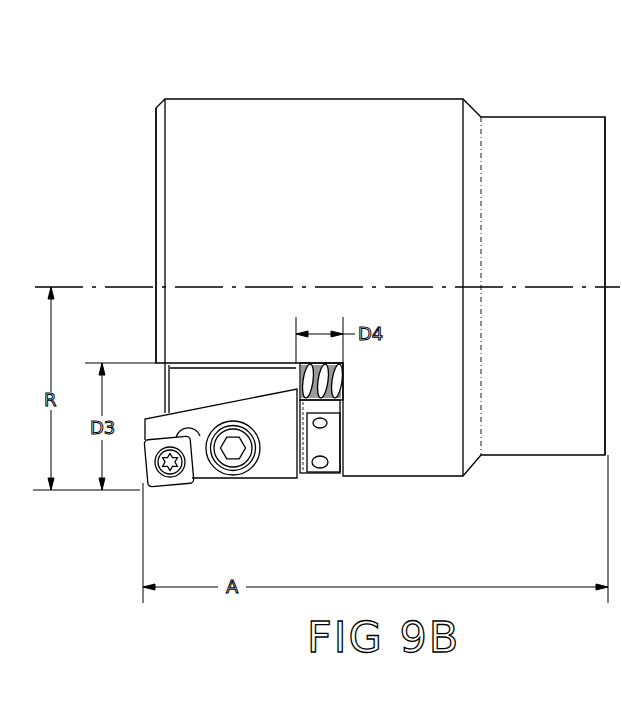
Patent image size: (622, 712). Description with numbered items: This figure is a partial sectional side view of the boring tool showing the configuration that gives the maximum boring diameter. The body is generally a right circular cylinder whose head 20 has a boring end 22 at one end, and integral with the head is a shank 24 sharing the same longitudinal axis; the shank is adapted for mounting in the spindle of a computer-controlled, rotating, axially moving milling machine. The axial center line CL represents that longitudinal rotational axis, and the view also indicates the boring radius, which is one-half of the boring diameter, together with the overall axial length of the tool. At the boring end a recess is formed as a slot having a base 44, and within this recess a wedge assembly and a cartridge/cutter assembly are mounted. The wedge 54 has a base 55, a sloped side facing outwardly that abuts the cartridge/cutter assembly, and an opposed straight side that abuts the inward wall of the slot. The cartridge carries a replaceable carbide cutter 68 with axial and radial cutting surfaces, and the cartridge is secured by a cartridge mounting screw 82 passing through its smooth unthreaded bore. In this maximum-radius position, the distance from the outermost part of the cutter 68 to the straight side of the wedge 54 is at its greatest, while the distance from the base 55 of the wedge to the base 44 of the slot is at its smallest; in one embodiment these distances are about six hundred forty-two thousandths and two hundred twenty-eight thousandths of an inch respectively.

The head 20 is at (202, 122).
The boring end 22 is at (156, 187).
The shank 24 is at (609, 137).
The axial center line of head CL is at (494, 287).
The wedge 54 is at (205, 383).
The base of wedge 55 is at (293, 385).
The cutter 68 is at (150, 484).
The cartridge mounting screw 82 is at (242, 457).
The base of slot 44 is at (342, 405).